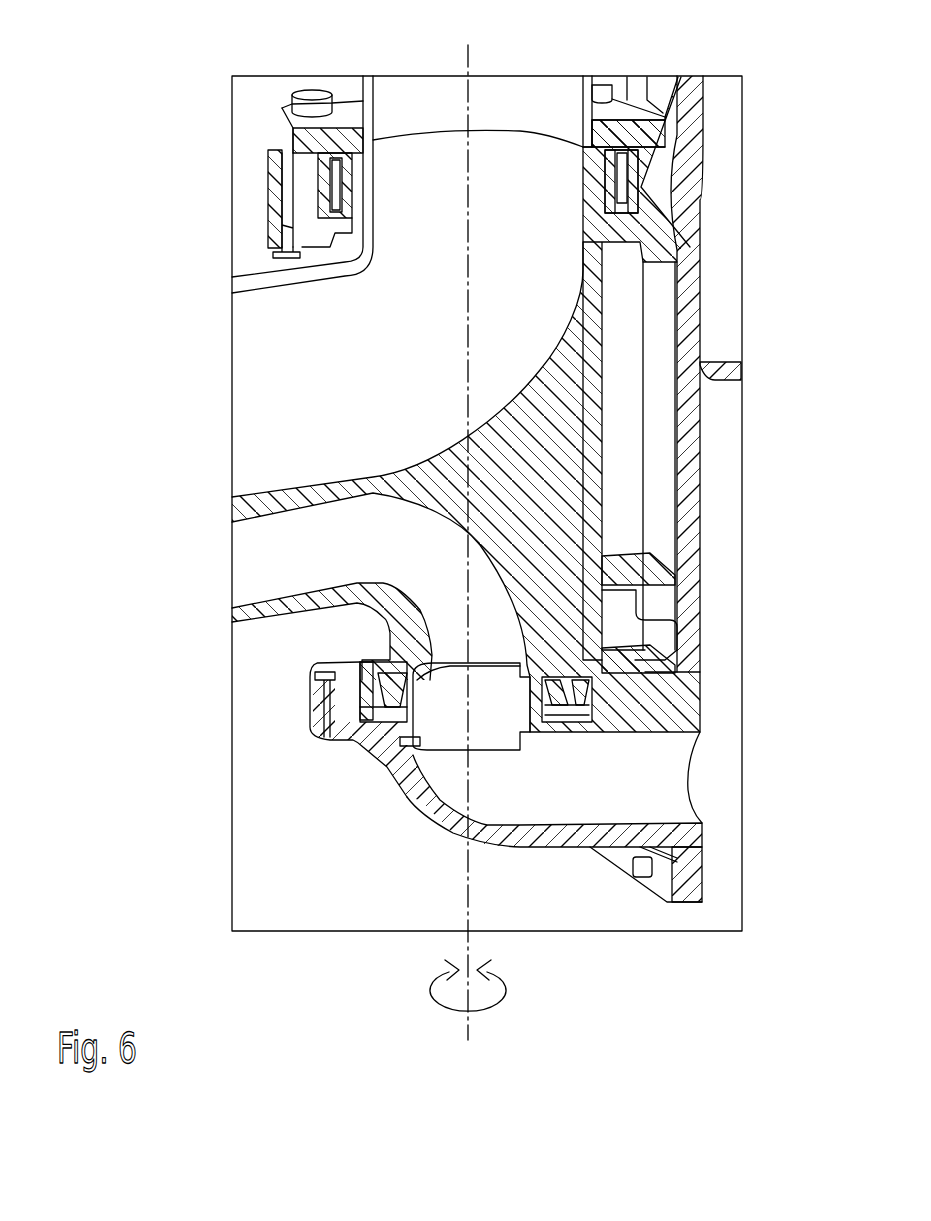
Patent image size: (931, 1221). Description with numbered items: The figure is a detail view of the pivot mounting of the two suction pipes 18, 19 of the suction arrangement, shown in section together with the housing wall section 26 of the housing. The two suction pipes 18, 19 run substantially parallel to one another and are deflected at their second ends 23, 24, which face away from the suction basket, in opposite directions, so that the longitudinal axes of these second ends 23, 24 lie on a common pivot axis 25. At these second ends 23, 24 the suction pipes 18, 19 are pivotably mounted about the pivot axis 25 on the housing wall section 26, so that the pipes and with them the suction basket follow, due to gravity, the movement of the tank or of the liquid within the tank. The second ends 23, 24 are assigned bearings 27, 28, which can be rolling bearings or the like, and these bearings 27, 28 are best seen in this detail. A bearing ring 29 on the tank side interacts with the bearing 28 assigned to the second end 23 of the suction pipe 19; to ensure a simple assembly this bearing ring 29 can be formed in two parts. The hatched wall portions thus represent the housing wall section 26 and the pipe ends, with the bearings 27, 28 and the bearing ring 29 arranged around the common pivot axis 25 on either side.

The suction pipe 18 is at (272, 559).
The suction pipe 19 is at (272, 373).
The second end 23 is at (573, 313).
The second end 24 is at (529, 612).
The pivot axis 25 is at (468, 872).
The housing wall section 26 is at (686, 415).
The bearing 27 is at (581, 688).
The bearing 28 is at (642, 188).
The bearing ring 29 is at (278, 201).